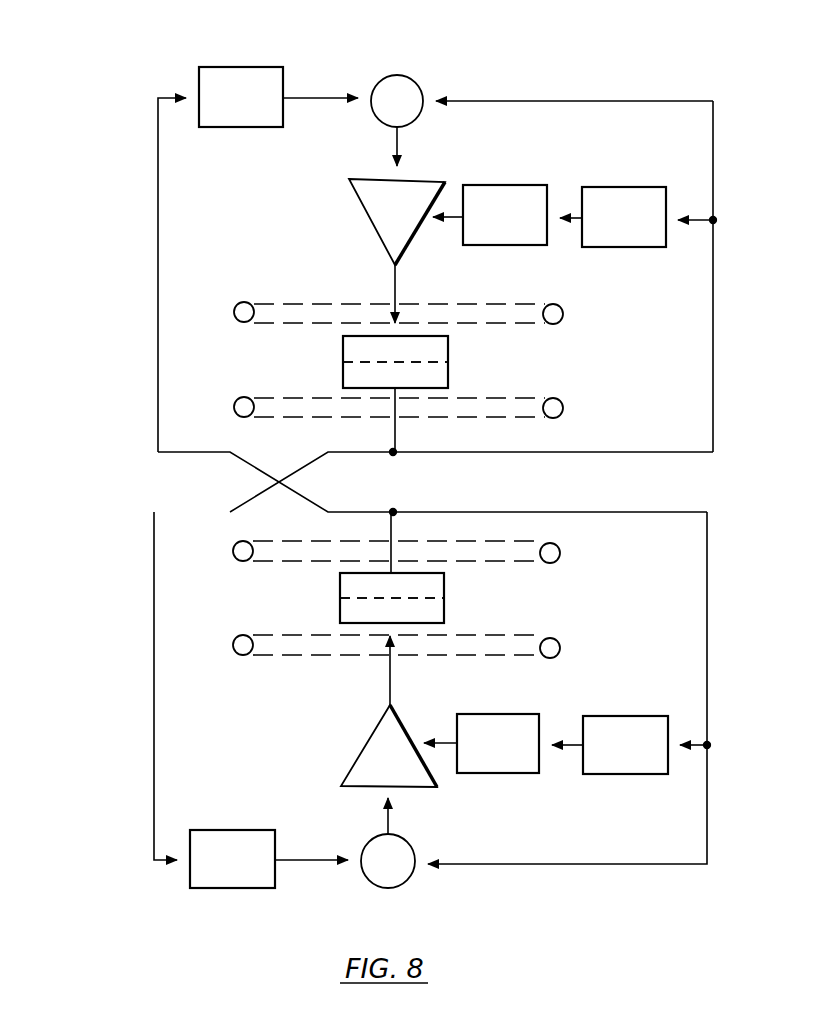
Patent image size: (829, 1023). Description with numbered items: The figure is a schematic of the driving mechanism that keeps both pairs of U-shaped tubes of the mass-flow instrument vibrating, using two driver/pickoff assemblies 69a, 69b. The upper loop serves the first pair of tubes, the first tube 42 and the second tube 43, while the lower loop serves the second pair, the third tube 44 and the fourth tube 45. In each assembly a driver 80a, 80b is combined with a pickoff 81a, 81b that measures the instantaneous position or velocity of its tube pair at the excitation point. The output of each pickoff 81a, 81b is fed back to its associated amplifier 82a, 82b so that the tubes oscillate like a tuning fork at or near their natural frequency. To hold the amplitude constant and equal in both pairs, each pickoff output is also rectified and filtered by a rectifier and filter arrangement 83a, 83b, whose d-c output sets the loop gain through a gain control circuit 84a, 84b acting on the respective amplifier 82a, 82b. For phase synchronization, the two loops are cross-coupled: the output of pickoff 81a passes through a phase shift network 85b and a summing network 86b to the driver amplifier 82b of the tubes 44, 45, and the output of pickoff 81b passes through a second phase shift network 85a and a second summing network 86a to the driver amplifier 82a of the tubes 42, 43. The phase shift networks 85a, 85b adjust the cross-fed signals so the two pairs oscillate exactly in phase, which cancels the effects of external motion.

The driver/pickoff assembly 69a is at (132, 300).
The driver/pickoff assembly 69b is at (129, 660).
The second phase shift network 85a is at (250, 74).
The second summing network 86a is at (405, 82).
The amplifier 82a is at (371, 205).
The gain control circuit 84a is at (506, 190).
The rectifier and filter arrangement 83a is at (620, 190).
The first tube 42 is at (243, 303).
The second tube 43 is at (243, 399).
The driver 80a is at (448, 348).
The pickoff 81a is at (448, 372).
The third tube 44 is at (243, 561).
The fourth tube 45 is at (243, 655).
The pickoff 81b is at (444, 585).
The driver 80b is at (444, 608).
The amplifier 82b is at (366, 757).
The gain control circuit 84b is at (500, 718).
The rectifier and filter arrangement 83b is at (614, 718).
The phase shift network 85b is at (234, 880).
The summing network 86b is at (398, 878).